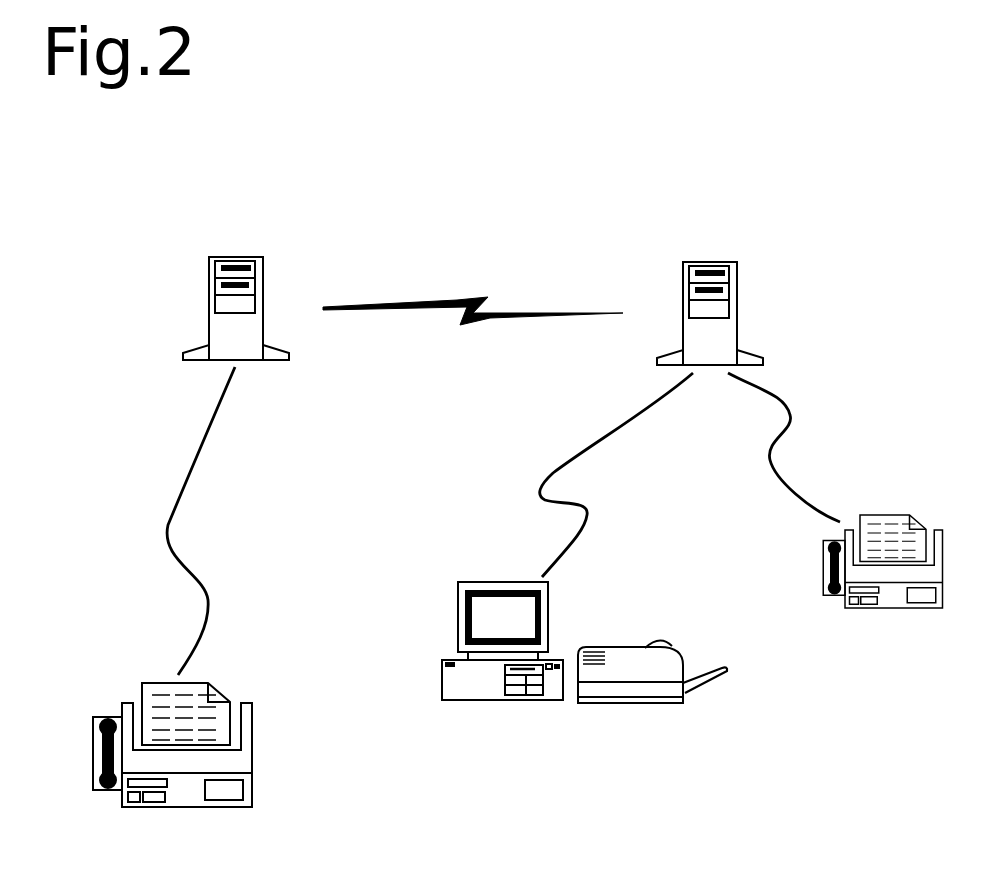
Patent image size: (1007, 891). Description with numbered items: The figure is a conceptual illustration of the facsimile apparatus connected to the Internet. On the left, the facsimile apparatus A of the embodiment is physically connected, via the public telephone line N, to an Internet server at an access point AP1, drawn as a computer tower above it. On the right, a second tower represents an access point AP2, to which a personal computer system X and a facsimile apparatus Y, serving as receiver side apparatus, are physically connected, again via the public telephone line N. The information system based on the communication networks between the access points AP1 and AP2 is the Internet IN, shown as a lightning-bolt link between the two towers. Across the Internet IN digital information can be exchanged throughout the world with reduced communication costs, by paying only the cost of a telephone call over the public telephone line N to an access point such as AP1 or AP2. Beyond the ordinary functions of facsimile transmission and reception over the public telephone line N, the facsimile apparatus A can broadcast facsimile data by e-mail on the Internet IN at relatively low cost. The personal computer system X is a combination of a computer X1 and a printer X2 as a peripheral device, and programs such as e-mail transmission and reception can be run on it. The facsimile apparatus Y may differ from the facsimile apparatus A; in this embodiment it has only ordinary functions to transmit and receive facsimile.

The access point AP1 is at (233, 257).
The access point AP2 is at (712, 262).
The Internet IN is at (458, 298).
The public telephone line N is at (195, 462).
The facsimile apparatus A is at (187, 807).
The personal computer system X is at (584, 715).
The computer X1 is at (498, 700).
The printer X2 is at (648, 703).
The facsimile apparatus Y is at (892, 608).